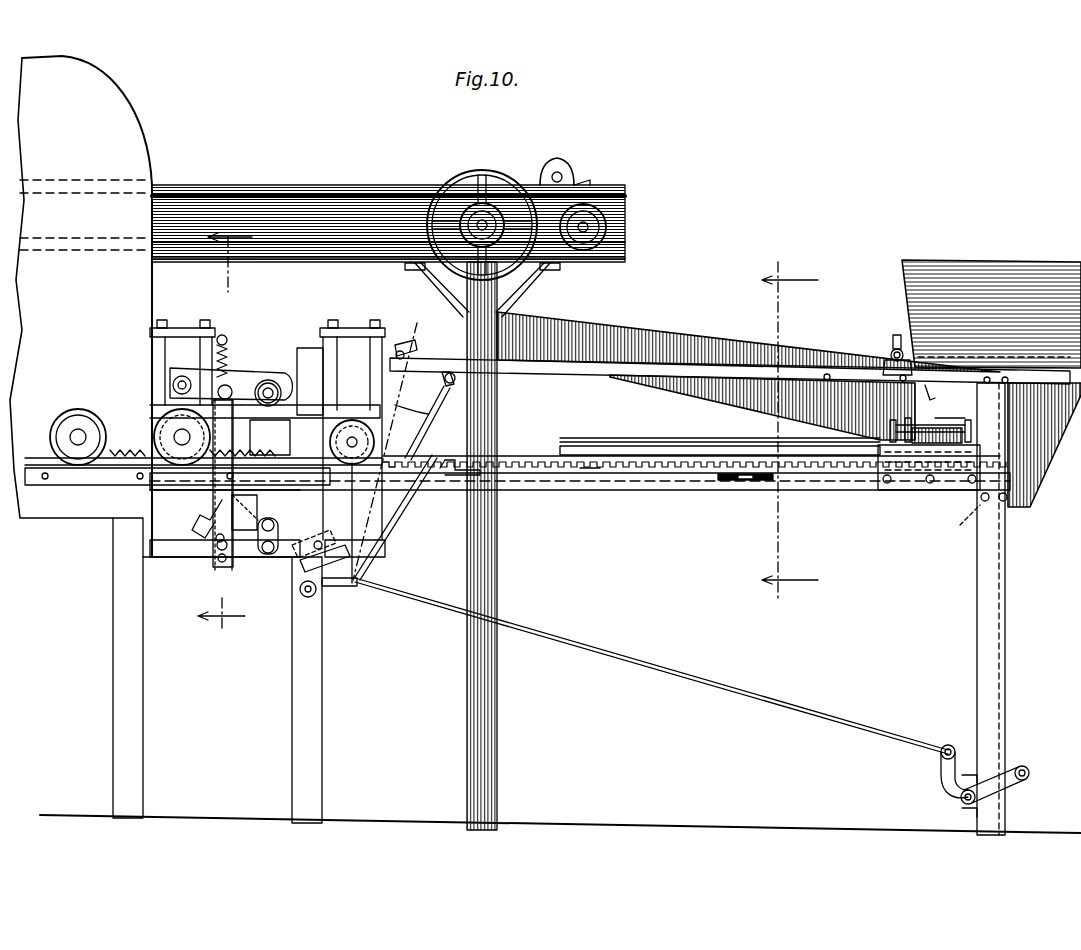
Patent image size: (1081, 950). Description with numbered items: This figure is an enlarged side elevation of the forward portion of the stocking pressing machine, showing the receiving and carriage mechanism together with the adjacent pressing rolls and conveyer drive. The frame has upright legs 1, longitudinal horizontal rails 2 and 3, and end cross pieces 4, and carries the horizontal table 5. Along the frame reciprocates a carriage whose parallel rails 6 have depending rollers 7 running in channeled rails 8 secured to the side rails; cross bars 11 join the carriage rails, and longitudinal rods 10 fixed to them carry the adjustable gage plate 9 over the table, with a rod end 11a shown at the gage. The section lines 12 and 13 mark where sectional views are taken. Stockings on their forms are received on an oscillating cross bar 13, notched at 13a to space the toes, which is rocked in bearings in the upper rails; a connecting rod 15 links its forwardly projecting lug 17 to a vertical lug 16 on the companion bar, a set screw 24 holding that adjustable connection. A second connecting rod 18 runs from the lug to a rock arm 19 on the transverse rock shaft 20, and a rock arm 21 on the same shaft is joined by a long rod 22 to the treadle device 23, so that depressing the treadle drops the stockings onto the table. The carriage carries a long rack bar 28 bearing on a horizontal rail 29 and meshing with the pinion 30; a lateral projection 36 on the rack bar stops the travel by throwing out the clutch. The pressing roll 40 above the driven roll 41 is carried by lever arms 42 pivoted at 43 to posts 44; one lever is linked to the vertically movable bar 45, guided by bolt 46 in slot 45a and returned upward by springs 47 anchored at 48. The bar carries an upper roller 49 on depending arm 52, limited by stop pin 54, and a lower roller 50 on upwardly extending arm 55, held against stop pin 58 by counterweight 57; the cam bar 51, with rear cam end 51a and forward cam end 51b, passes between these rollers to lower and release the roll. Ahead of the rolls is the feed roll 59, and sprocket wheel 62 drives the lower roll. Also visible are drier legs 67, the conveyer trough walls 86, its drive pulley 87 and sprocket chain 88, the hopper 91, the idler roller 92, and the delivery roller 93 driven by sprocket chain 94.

The upright supports or legs 1 is at (322, 742).
The longitudinal horizontal rails 2 is at (545, 452).
The longitudinal horizontal rails 3 is at (603, 358).
The end rails or cross pieces 4 is at (1014, 464).
The horizontal table 5 is at (660, 433).
The carriage rails 6 is at (908, 478).
The depending rollers 7 is at (855, 492).
The channeled rails 8 is at (585, 437).
The transverse gage plate 9 is at (971, 428).
The longitudinal rods 10 is at (890, 428).
The cross bars 11 is at (905, 428).
The slide rod 11a is at (935, 420).
The section line 12 12 is at (789, 427).
The oscillating cross bar 13 is at (313, 429).
The notches 13a is at (393, 440).
The connecting rod 15 is at (523, 380).
The vertically extending lug 16 is at (892, 355).
The forwardly projecting lug 17 is at (446, 370).
The connecting rod 18 is at (392, 508).
The rock arm 19 is at (345, 588).
The transverse rock shaft 20 is at (300, 588).
The rock arm 21 is at (302, 557).
The long rod 22 is at (700, 675).
The treadle device 23 is at (1023, 765).
The set screw 24 is at (897, 345).
The rack bar 28 is at (700, 492).
The horizontal rail 29 is at (648, 492).
The pinion 30 is at (264, 437).
The projection 36 is at (745, 482).
The oscillating pressing roll 40 is at (175, 382).
The lower positively driven roll 41 is at (150, 405).
The lever arms 42 is at (195, 370).
The pivot 43 is at (265, 380).
The posts or standards 44 is at (291, 348).
The vertically movable bar 45 is at (214, 565).
The slot 45a is at (214, 540).
The bolt 46 is at (255, 552).
The springs 47 is at (232, 350).
The spring attachment point 48 is at (224, 335).
The upper roller 49 is at (270, 435).
The lower roller 50 is at (255, 509).
The cam bar or plate 51 is at (528, 478).
The rearward cam-shaped end 51a is at (448, 480).
The forward cam-shaped end 51b is at (595, 480).
The depending arm 52 is at (260, 393).
The stop pin 54 is at (237, 485).
The upwardly extending arm 55 is at (245, 511).
The counterweight 57 is at (210, 512).
The stop pin 58 is at (225, 480).
The transverse feed roll 59 is at (330, 381).
The sprocket wheel 62 is at (140, 480).
The legs 67 is at (143, 690).
The trough walls 86 is at (388, 235).
The pulley 87 is at (490, 172).
The sprocket chain 88 is at (342, 186).
The receiver or hopper 91 is at (652, 388).
The idler roller 92 is at (600, 200).
The final or delivery roller 93 is at (575, 165).
The sprocket chain 94 is at (545, 260).